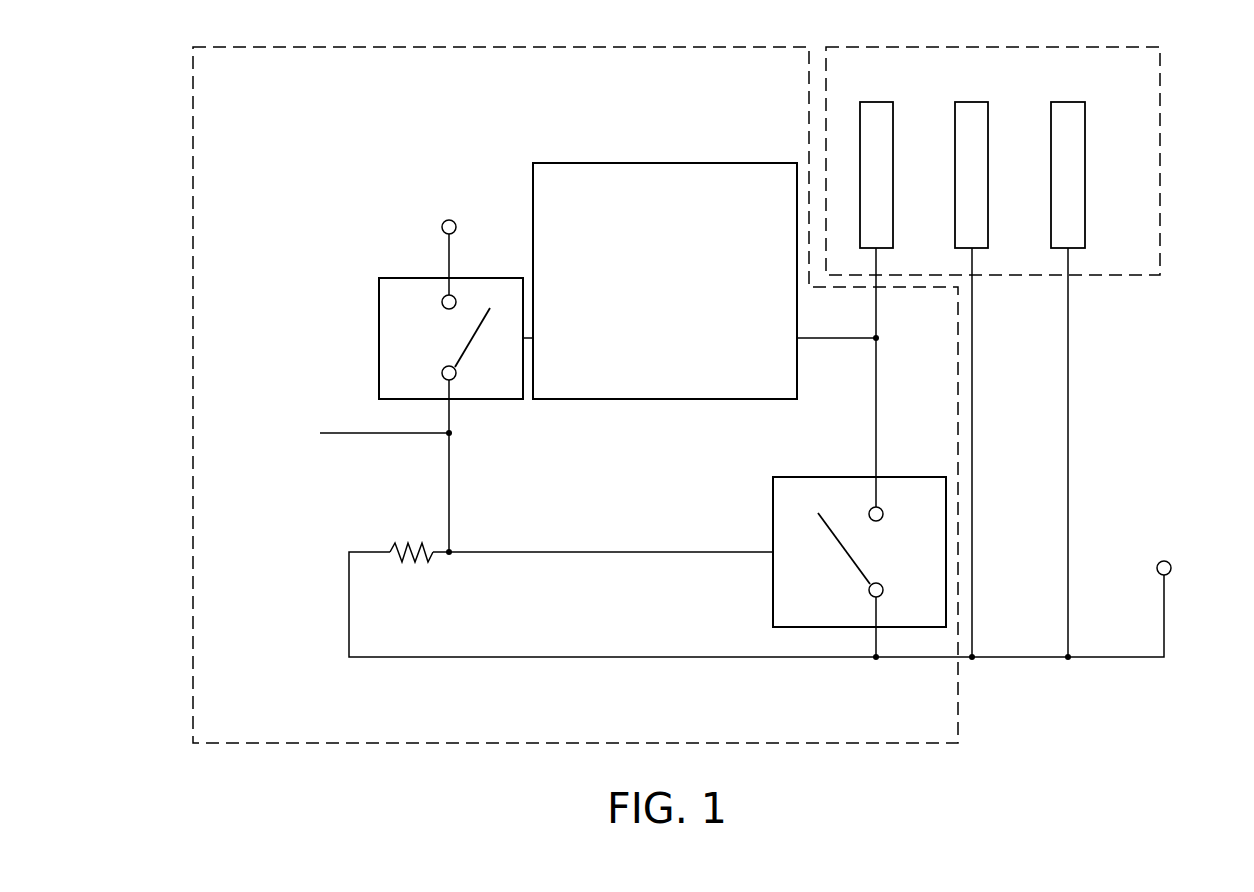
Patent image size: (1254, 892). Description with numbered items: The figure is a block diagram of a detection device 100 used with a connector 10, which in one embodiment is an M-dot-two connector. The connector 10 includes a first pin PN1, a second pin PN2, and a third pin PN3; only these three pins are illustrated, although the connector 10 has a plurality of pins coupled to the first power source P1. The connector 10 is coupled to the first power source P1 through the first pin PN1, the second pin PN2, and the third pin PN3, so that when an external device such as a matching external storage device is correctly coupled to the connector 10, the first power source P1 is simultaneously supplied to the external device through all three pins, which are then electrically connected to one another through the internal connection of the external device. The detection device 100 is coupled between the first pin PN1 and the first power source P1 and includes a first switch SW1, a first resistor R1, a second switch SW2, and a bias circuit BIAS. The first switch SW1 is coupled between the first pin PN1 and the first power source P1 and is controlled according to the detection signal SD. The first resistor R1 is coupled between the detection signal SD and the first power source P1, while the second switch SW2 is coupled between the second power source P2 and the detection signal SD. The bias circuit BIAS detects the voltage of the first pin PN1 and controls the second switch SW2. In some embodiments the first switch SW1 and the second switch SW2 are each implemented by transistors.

The detection device 100 is at (193, 136).
The connector 10 is at (1160, 157).
The first pin PN1 is at (876, 287).
The second pin PN2 is at (971, 362).
The third pin PN3 is at (1068, 362).
The bias circuit BIAS is at (663, 163).
The first switch SW1 is at (773, 503).
The second switch SW2 is at (379, 340).
The first resistor R1 is at (406, 545).
The detection signal SD is at (362, 435).
The first power source P1 is at (1162, 550).
The second power source P2 is at (448, 239).